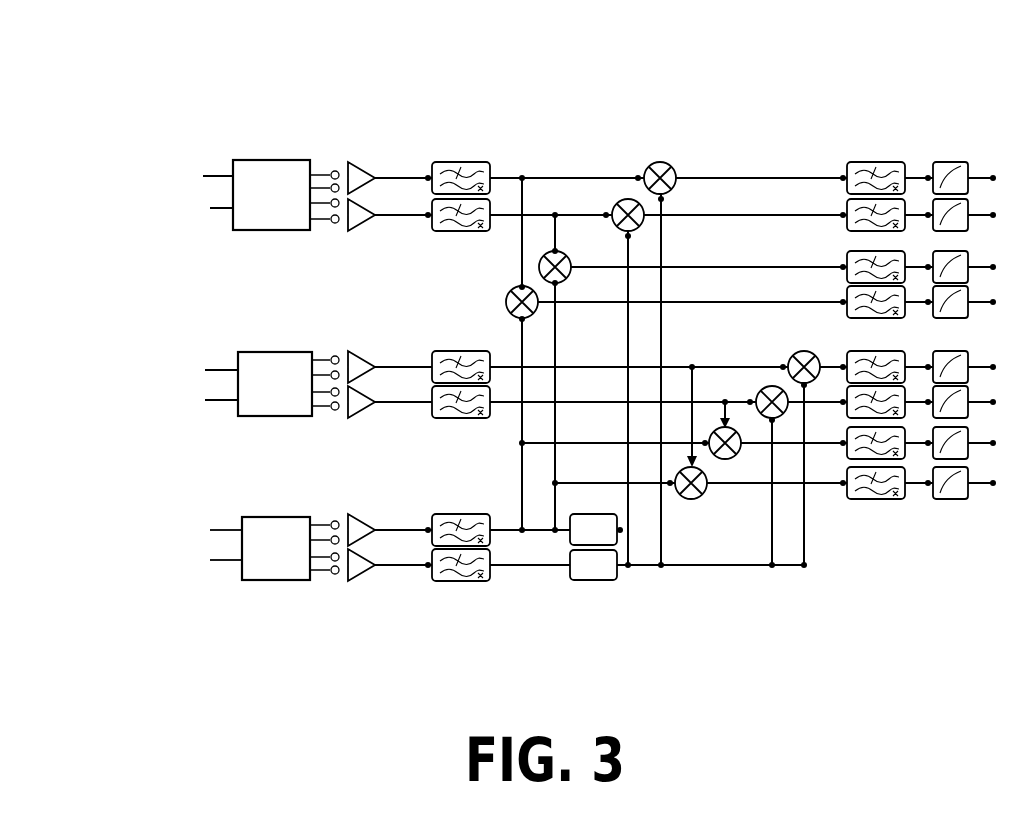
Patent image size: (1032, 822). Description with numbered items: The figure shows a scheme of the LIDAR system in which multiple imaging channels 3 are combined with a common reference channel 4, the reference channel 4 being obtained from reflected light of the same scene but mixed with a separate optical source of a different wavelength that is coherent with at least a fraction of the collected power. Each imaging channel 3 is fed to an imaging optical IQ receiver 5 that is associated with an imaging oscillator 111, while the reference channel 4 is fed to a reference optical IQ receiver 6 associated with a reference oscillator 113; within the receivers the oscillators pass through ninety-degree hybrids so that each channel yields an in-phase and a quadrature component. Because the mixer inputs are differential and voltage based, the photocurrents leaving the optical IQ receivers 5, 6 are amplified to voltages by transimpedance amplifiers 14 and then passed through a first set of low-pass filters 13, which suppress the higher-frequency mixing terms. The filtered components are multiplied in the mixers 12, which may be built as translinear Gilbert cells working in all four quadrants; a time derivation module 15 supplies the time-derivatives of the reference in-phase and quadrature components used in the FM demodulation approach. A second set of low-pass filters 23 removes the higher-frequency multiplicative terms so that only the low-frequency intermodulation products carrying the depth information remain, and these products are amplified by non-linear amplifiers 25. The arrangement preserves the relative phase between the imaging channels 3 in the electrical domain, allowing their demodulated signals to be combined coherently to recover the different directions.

The imaging channel 3 is at (212, 370).
The imaging oscillator 111 is at (218, 400).
The imaging optical IQ receiver 5 is at (245, 163).
The reference channel 4 is at (213, 530).
The reference oscillator 113 is at (210, 560).
The reference optical IQ receiver 6 is at (240, 572).
The transimpedance amplifier 14 is at (355, 165).
The first set of low-pass filters 13 is at (463, 173).
The mixers 12 is at (667, 158).
The time derivation module 15 is at (592, 580).
The second set of low-pass filters 23 is at (880, 165).
The non-linear amplifiers 25 is at (945, 163).